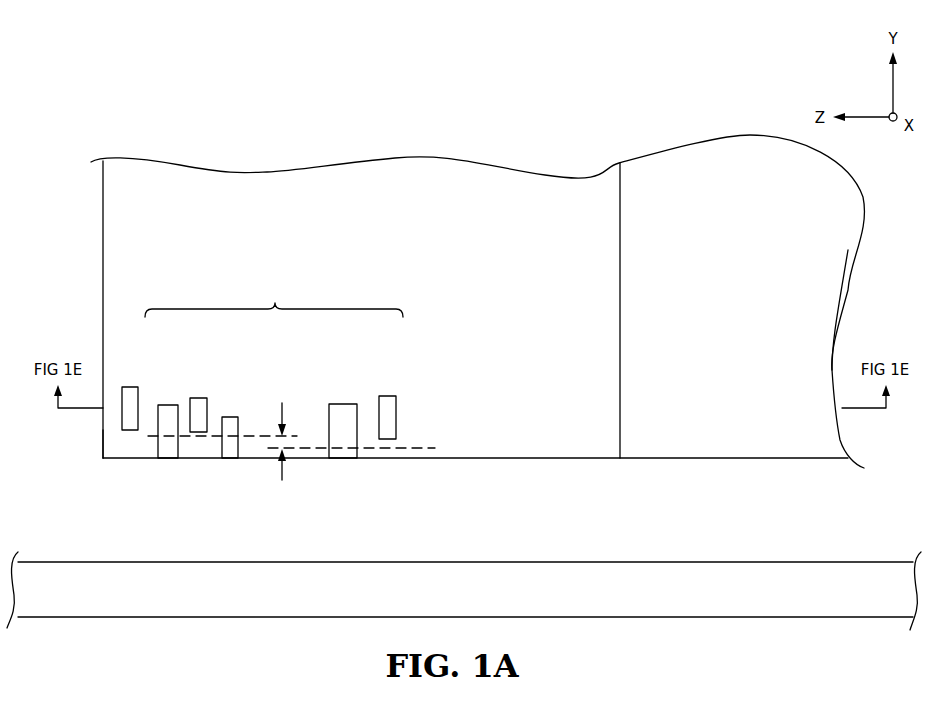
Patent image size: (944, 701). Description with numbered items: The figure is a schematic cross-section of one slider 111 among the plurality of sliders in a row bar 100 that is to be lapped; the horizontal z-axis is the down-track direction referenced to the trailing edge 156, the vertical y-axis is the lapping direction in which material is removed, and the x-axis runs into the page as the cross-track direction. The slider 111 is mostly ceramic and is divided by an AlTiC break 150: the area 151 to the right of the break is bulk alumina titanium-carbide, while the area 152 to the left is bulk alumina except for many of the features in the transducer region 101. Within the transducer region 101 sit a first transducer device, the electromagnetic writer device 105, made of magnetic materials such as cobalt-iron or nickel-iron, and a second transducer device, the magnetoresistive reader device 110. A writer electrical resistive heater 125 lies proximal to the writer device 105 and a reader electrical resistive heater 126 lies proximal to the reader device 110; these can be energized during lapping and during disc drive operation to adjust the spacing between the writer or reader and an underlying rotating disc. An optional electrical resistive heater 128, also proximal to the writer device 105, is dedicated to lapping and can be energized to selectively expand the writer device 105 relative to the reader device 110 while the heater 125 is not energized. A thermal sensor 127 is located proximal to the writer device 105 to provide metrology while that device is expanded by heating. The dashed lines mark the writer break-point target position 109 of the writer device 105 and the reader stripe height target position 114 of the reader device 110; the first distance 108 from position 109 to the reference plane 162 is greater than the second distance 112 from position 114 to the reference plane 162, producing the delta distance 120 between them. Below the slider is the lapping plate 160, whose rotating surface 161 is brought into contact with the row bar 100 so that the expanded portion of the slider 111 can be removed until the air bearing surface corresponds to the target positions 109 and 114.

The row bar 100 is at (90, 116).
The transducer region 101 is at (274, 301).
The electromagnetic writer device 105 is at (168, 422).
The first distance 108 is at (168, 470).
The writer break-point target position 109 is at (263, 436).
The magnetoresistive reader device 110 is at (344, 430).
The slider 111 is at (818, 285).
The second distance 112 is at (343, 470).
The reader stripe height target position 114 is at (418, 448).
The delta distance 120 is at (282, 432).
The writer electrical resistive heater 125 is at (198, 398).
The reader electrical resistive heater 126 is at (388, 396).
The thermal sensor 127 is at (230, 417).
The optional electrical resistive heater 128 is at (131, 387).
The AlTiC break 150 is at (620, 335).
The AlTiC area 151 is at (718, 302).
The alumina area 152 is at (523, 302).
The trailing edge 156 is at (90, 455).
The lapping plate 160 is at (464, 591).
The rotating surface 161 is at (665, 562).
The reference plane 162 is at (723, 459).